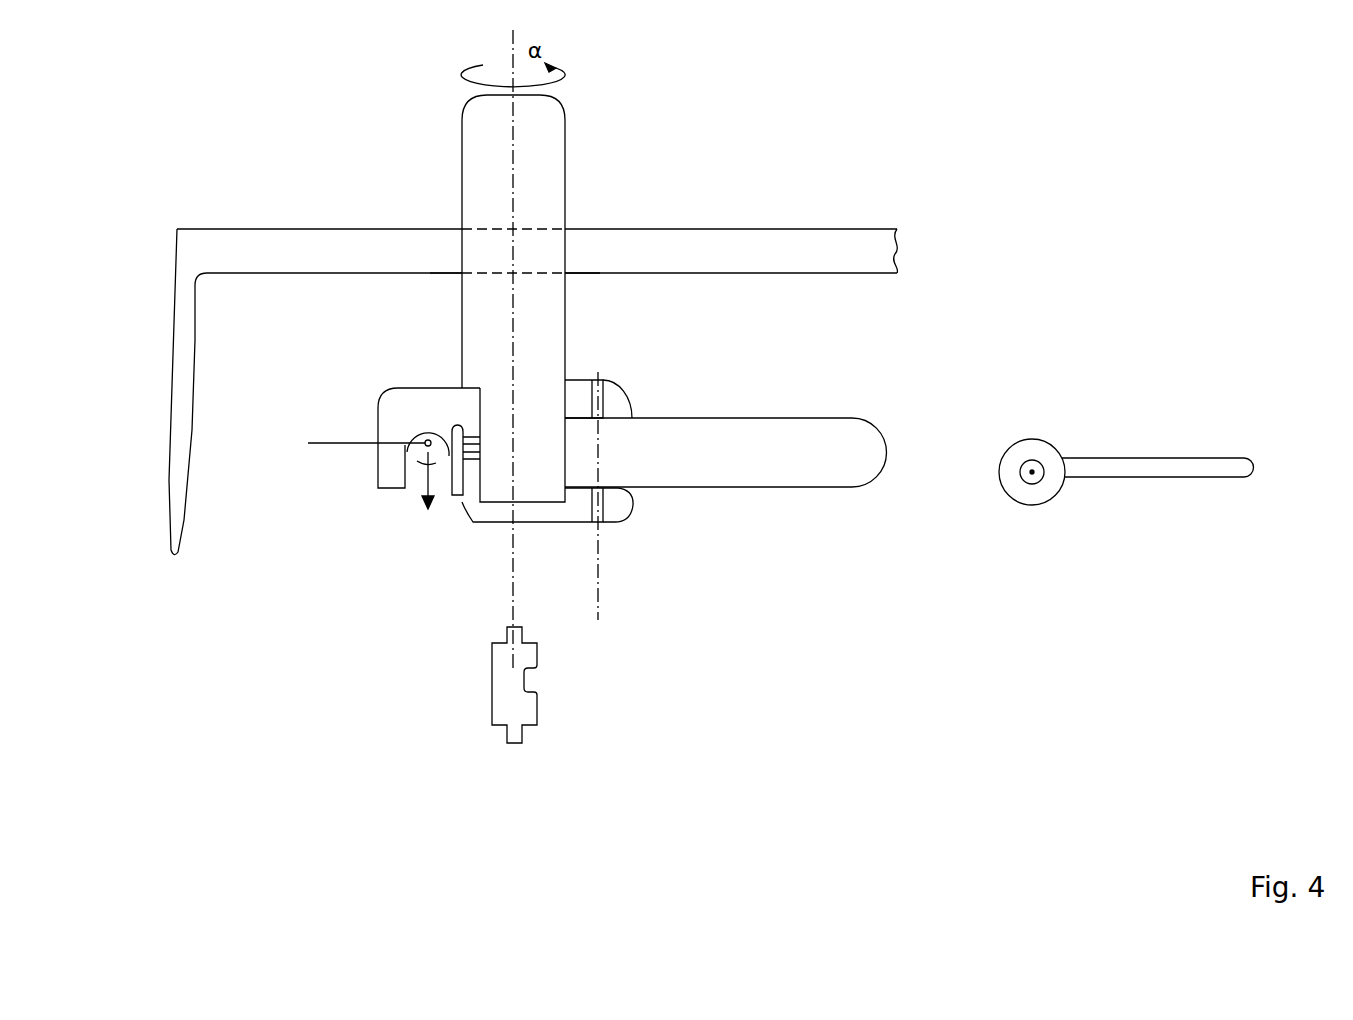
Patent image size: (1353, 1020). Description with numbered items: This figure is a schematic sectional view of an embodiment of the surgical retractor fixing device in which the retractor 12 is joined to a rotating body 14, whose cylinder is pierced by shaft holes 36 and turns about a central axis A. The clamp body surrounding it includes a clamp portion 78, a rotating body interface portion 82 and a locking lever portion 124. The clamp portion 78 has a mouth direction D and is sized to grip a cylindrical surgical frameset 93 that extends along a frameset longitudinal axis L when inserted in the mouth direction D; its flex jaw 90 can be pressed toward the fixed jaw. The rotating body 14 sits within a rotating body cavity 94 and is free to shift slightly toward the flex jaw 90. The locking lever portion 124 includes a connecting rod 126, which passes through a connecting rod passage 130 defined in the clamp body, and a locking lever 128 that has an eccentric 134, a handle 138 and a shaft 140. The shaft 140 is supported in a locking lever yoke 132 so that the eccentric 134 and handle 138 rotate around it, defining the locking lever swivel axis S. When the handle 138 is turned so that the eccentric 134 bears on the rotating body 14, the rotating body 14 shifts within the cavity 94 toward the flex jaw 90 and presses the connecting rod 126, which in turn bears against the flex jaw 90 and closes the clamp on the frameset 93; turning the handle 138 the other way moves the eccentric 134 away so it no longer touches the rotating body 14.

The retractor 12 is at (276, 228).
The rotating body 14 is at (549, 96).
The shaft holes 36 is at (567, 228).
The rotating body interface portion 82 is at (435, 288).
The rotating body cavity 94 is at (592, 290).
The clamp portion 78 is at (383, 478).
The cylindrical surgical frameset 93 is at (420, 438).
The flex jaw 90 is at (448, 491).
The connecting rod 126 is at (472, 428).
The connecting rod passage 130 is at (462, 503).
The locking lever portion 124 is at (583, 378).
The locking lever yoke 132 is at (625, 397).
The eccentric 134 is at (572, 467).
The locking lever 128 is at (702, 490).
The handle 138 is at (1162, 479).
The shaft 140 is at (1019, 474).
The rotation axis A is at (514, 160).
The locking lever swivel axis S is at (600, 591).
The frameset longitudinal axis L is at (358, 447).
The mouth direction D is at (421, 491).